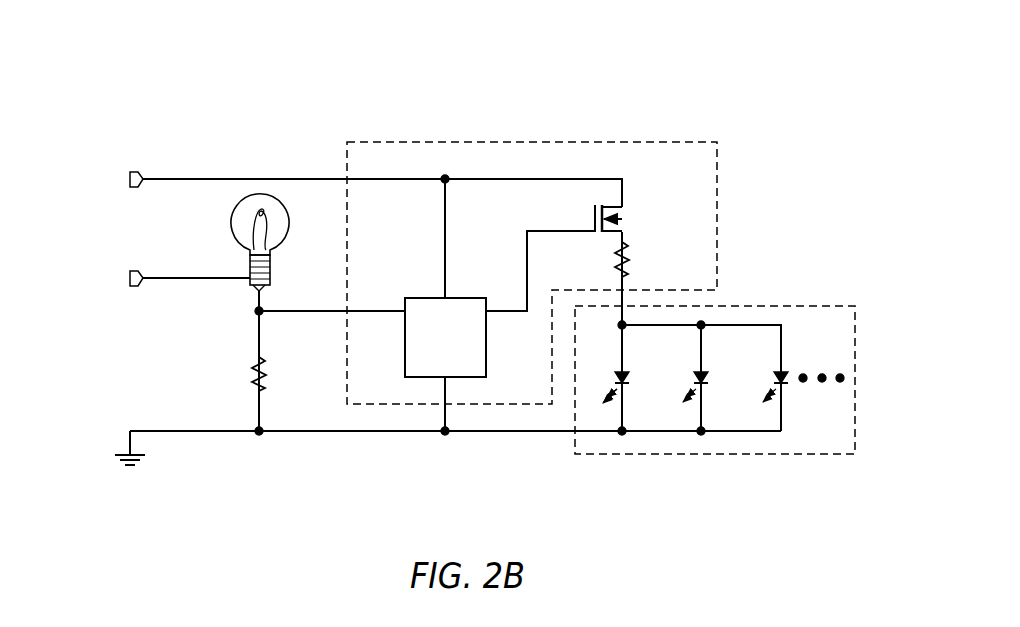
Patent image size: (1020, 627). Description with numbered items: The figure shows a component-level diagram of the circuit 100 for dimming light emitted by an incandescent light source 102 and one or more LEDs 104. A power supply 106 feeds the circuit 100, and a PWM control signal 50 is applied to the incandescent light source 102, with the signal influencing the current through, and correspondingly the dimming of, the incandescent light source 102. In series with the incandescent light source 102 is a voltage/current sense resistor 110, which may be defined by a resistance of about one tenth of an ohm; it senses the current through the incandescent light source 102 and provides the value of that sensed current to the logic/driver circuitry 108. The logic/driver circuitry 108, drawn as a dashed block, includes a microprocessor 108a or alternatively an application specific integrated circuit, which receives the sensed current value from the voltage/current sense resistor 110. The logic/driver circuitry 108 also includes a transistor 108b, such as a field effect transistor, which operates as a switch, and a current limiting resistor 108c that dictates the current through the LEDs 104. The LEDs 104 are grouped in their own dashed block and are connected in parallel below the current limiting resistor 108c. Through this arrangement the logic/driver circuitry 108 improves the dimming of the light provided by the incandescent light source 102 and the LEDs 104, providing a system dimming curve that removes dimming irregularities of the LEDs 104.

The circuit 100 is at (795, 84).
The incandescent light source 102 is at (226, 212).
The LED 104 is at (822, 302).
The power supply 106 is at (133, 189).
The PWM control signal 50 is at (135, 288).
The logic/driver circuitry 108 is at (684, 136).
The microprocessor 108a is at (416, 297).
The transistor 108b is at (636, 212).
The current limiting resistor 108c is at (634, 258).
The voltage/current sense resistor 110 is at (247, 371).